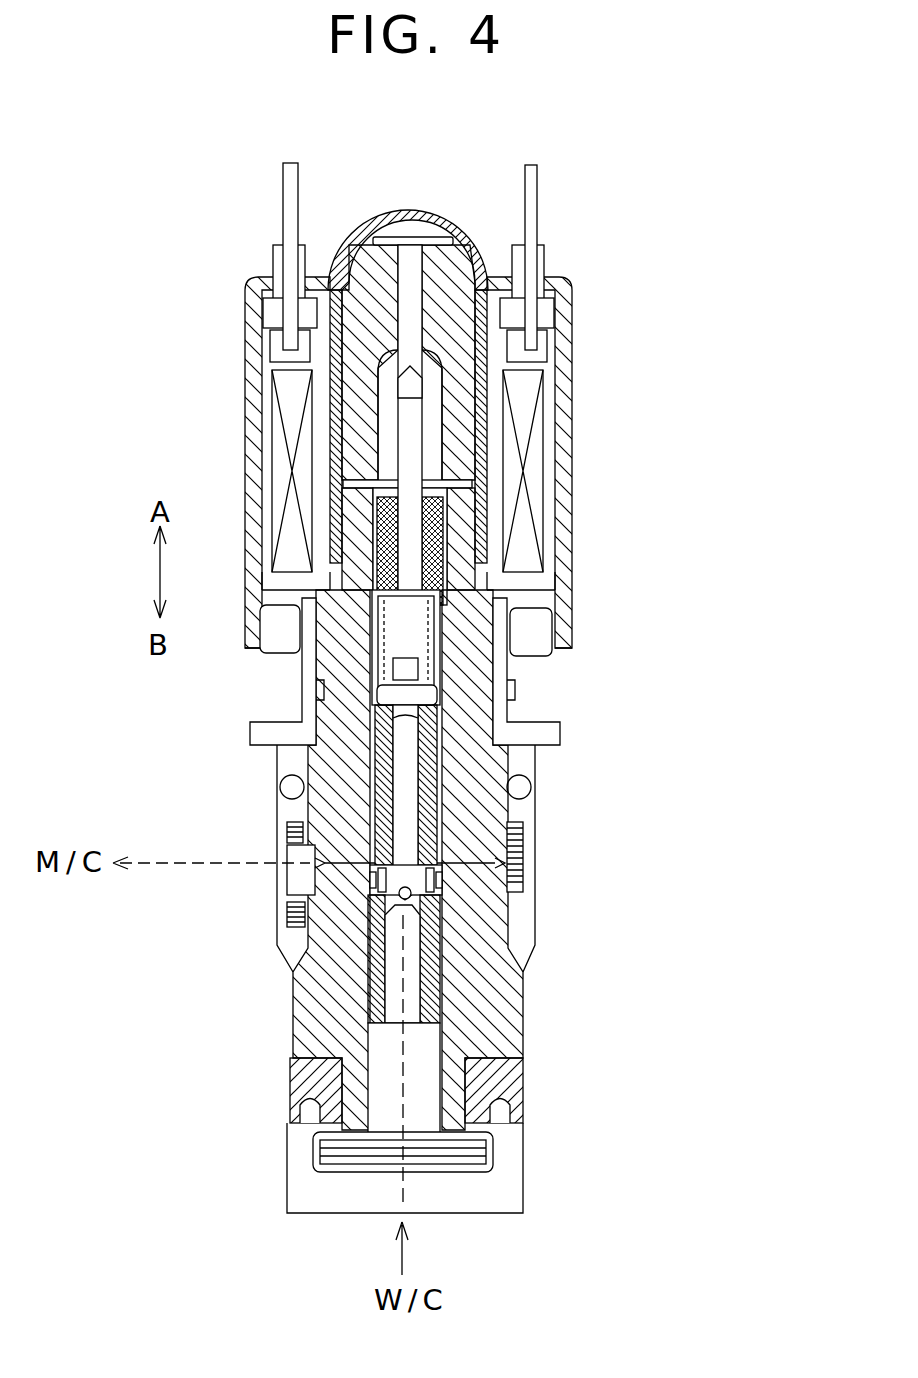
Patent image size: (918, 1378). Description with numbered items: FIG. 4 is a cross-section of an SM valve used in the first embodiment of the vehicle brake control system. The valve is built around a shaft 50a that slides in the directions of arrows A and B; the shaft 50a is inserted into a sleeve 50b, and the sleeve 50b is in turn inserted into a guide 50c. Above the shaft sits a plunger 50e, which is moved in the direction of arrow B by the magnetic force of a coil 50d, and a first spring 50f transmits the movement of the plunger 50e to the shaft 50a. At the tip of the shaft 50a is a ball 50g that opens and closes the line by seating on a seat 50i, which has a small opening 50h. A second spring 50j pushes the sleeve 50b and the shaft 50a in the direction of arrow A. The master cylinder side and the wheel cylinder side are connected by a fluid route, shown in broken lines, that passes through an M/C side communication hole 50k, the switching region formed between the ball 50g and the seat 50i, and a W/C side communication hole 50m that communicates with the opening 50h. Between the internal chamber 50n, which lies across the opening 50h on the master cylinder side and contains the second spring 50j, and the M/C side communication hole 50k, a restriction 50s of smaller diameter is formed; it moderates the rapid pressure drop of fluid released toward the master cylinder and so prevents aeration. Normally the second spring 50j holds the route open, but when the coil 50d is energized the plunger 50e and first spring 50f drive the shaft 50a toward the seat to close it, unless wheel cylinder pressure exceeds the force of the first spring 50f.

The shaft 50a is at (413, 775).
The sleeve 50b is at (375, 718).
The guide 50c is at (493, 1021).
The coil 50d is at (523, 548).
The plunger 50e is at (412, 412).
The first spring 50f is at (440, 652).
The ball 50g is at (385, 897).
The small opening 50h is at (440, 888).
The seat 50i is at (378, 1016).
The second spring 50j is at (367, 832).
The M/C side communication hole 50k is at (310, 871).
The W/C side communication hole 50m is at (395, 968).
The internal chamber 50n is at (395, 878).
The restriction 50s is at (375, 878).